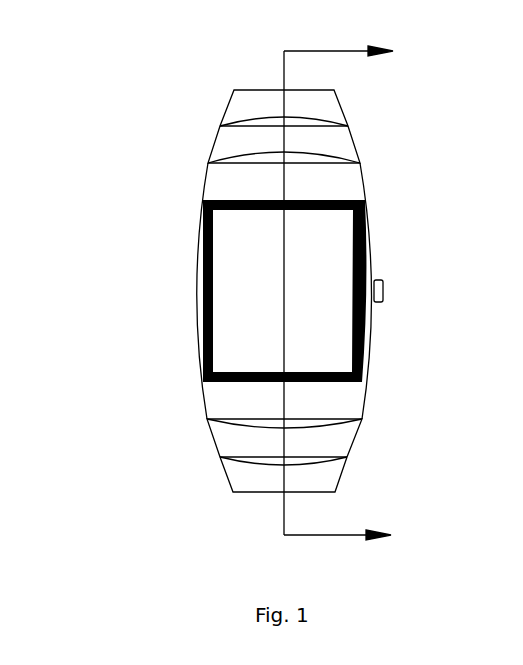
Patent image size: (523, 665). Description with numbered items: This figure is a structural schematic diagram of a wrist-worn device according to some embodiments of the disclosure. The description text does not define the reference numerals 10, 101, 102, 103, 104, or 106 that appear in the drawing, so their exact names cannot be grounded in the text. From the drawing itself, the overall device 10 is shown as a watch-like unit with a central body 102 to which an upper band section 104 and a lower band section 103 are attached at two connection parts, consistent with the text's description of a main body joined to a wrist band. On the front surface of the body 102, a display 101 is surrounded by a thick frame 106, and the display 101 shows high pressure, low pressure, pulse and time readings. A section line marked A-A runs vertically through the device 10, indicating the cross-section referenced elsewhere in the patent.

The smart watch 10 is at (246, 276).
The display screen 101 is at (233, 221).
The watch body 102 is at (230, 188).
The lower strap 103 is at (226, 392).
The upper strap 104 is at (232, 138).
The display frame 106 is at (200, 286).